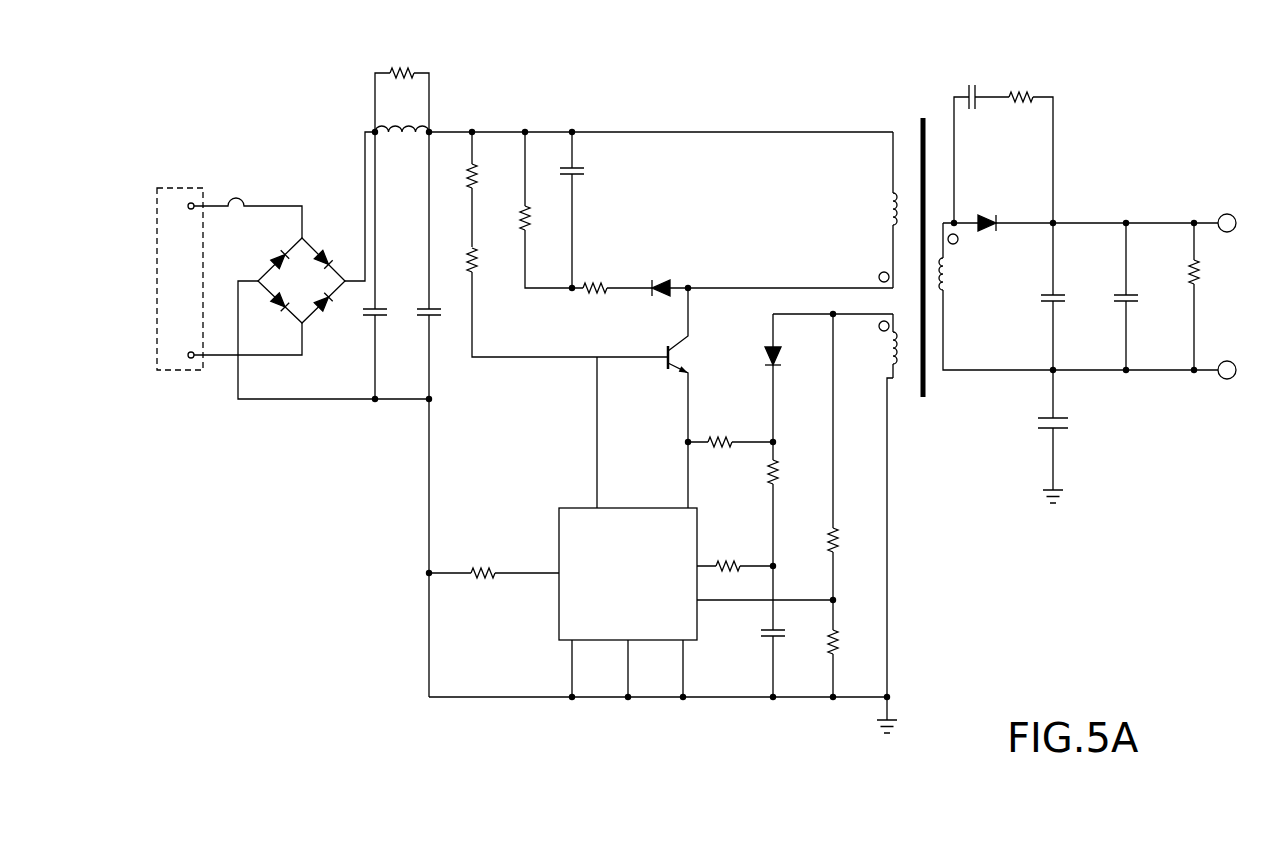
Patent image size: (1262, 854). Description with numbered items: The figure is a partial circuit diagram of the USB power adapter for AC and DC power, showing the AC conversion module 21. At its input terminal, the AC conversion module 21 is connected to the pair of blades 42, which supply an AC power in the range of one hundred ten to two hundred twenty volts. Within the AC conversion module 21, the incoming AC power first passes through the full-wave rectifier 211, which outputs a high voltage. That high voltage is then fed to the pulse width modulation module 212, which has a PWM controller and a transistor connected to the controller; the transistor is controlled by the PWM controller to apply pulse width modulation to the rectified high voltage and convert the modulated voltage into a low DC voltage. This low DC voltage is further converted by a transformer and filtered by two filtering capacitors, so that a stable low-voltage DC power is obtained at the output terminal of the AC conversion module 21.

The pair of blades 42 is at (180, 189).
The full-wave rectifier 211 is at (312, 230).
The pulse width modulation (PWM) module 212 is at (623, 126).
The AC conversion module 21 is at (398, 463).